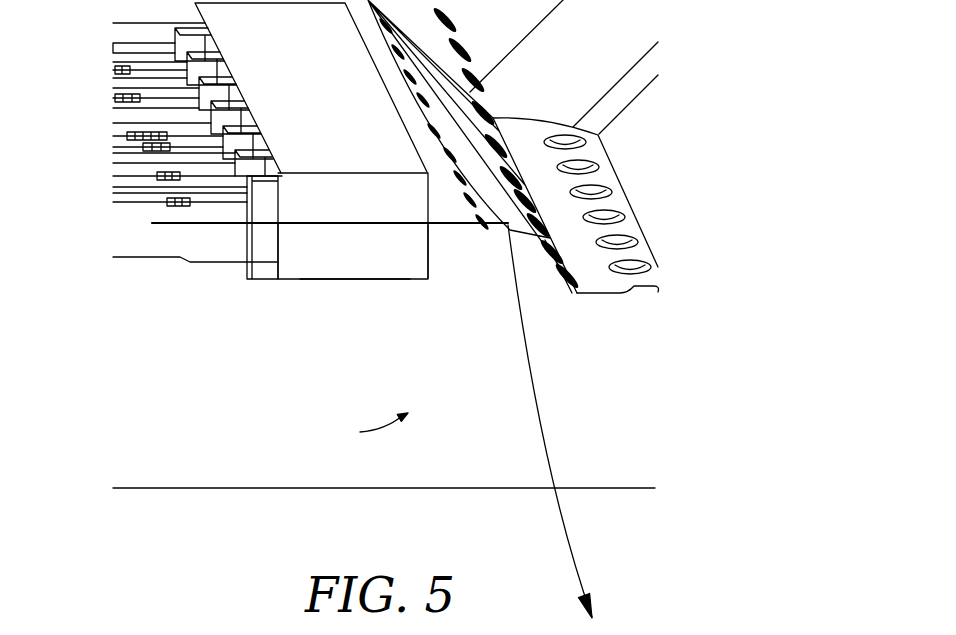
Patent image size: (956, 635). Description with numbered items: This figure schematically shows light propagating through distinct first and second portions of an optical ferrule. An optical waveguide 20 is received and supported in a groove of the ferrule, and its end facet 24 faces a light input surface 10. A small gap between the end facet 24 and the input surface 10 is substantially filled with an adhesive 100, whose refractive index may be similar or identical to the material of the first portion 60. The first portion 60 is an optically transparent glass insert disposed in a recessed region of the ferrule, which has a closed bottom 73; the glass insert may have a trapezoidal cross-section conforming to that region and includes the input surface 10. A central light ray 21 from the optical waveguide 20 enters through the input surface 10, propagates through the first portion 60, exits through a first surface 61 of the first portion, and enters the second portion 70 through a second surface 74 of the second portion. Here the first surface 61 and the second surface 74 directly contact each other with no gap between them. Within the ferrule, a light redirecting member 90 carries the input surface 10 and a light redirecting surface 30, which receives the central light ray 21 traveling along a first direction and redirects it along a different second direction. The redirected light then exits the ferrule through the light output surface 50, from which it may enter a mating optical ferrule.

The light input surface 10 is at (277, 236).
The optical waveguide 20 is at (128, 235).
The central light ray 21 is at (243, 215).
The end facet 24 is at (168, 222).
The light redirecting surface 30 is at (537, 222).
The light output surface 50 is at (407, 488).
The first portion 60 is at (364, 263).
The first surface 61 is at (428, 192).
The second portion 70 is at (474, 388).
The closed bottom 73 is at (386, 280).
The second surface 74 is at (430, 248).
The light redirecting member 90 is at (366, 431).
The adhesive 100 is at (263, 193).